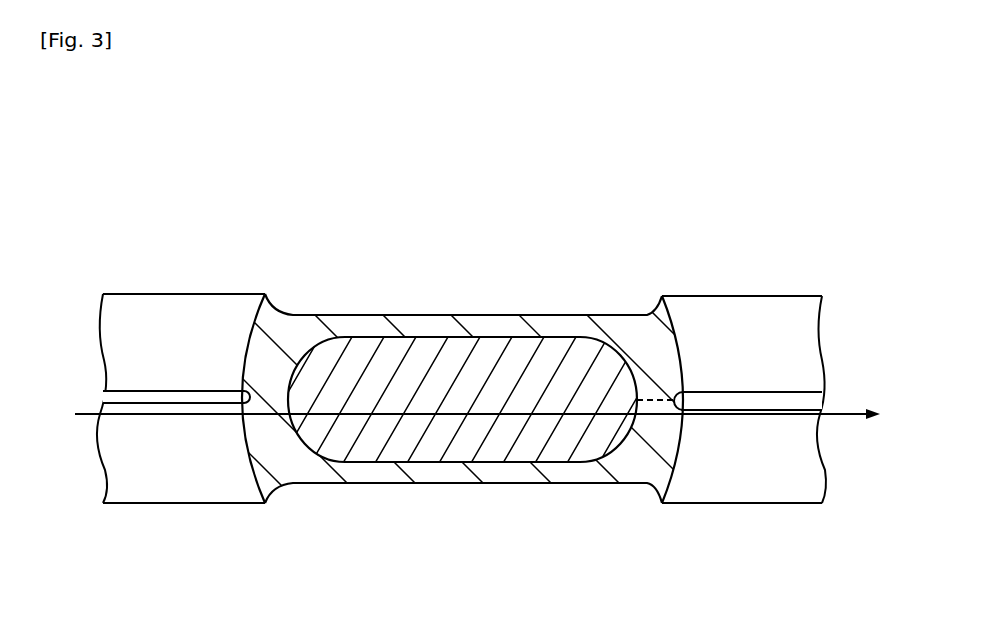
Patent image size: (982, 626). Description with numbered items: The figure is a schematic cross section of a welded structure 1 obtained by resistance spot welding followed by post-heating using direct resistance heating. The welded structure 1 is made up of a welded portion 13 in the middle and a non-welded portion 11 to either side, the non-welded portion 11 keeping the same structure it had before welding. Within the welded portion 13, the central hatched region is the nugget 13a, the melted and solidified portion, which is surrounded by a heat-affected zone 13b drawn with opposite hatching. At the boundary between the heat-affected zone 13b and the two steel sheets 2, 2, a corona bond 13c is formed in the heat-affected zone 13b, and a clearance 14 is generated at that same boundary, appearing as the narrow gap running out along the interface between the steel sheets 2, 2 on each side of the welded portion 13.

The welded structure 1 is at (655, 184).
The steel sheet 2 is at (788, 310).
The non-welded portion 11 is at (168, 294).
The welded portion 13 is at (540, 317).
The nugget 13a is at (481, 445).
The heat-affected zone 13b is at (361, 470).
The corona bond 13c is at (652, 462).
The clearance 14 is at (162, 398).